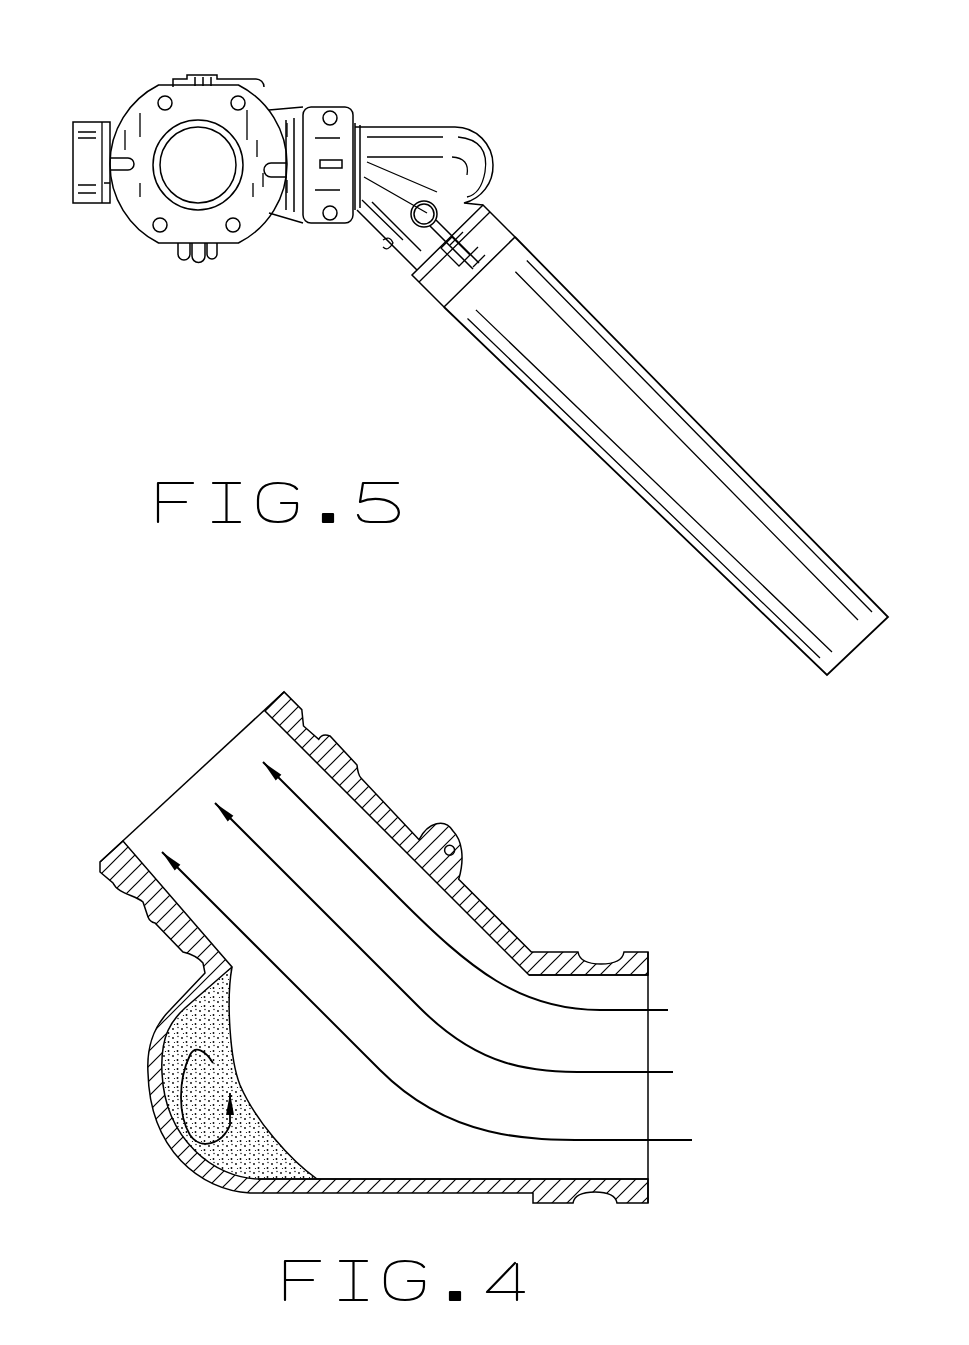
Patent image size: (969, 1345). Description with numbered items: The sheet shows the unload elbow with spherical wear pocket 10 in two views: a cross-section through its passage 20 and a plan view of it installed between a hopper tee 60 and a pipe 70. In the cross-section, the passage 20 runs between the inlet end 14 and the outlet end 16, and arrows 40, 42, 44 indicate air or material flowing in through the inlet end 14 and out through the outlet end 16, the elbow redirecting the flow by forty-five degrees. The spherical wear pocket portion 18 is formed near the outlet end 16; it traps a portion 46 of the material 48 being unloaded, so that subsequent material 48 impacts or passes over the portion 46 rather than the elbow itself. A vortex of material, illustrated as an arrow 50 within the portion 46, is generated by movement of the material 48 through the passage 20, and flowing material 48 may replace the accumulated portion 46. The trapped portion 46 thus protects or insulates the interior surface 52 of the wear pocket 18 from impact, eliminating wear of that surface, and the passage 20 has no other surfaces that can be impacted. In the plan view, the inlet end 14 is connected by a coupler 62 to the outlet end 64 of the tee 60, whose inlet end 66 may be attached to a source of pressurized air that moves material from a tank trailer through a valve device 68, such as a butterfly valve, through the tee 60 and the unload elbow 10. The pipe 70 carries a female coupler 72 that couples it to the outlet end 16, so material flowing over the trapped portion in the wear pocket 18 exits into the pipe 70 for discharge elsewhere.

In FIG. 5, the unload elbow with spherical wear pocket 10 is at (487, 210).
In FIG. 4, the unload elbow with spherical wear pocket 10 is at (418, 925).
In FIG. 5, the inlet end 14 is at (373, 113).
In FIG. 4, the inlet end 14 is at (686, 1032).
In FIG. 5, the outlet end 16 is at (407, 265).
In FIG. 4, the outlet end 16 is at (354, 925).
In FIG. 4, the spherical wear pocket portion 18 is at (354, 1022).
In FIG. 4, the passage 20 is at (617, 1098).
In FIG. 4, the arrow 40 is at (463, 950).
In FIG. 4, the arrow 42 is at (323, 911).
In FIG. 4, the arrow 44 is at (304, 996).
In FIG. 4, the portion of material 46 is at (200, 1022).
In FIG. 4, the material 48 is at (243, 1036).
In FIG. 4, the arrow 50 is at (235, 1119).
In FIG. 4, the interior surface 52 is at (268, 1177).
In FIG. 5, the hopper tee 60 is at (284, 88).
In FIG. 5, the coupler 62 is at (341, 100).
In FIG. 5, the outlet end 64 is at (320, 225).
In FIG. 5, the inlet end 66 is at (88, 122).
In FIG. 5, the valve device 68 is at (192, 165).
In FIG. 5, the pipe 70 is at (645, 334).
In FIG. 5, the female coupler 72 is at (508, 208).